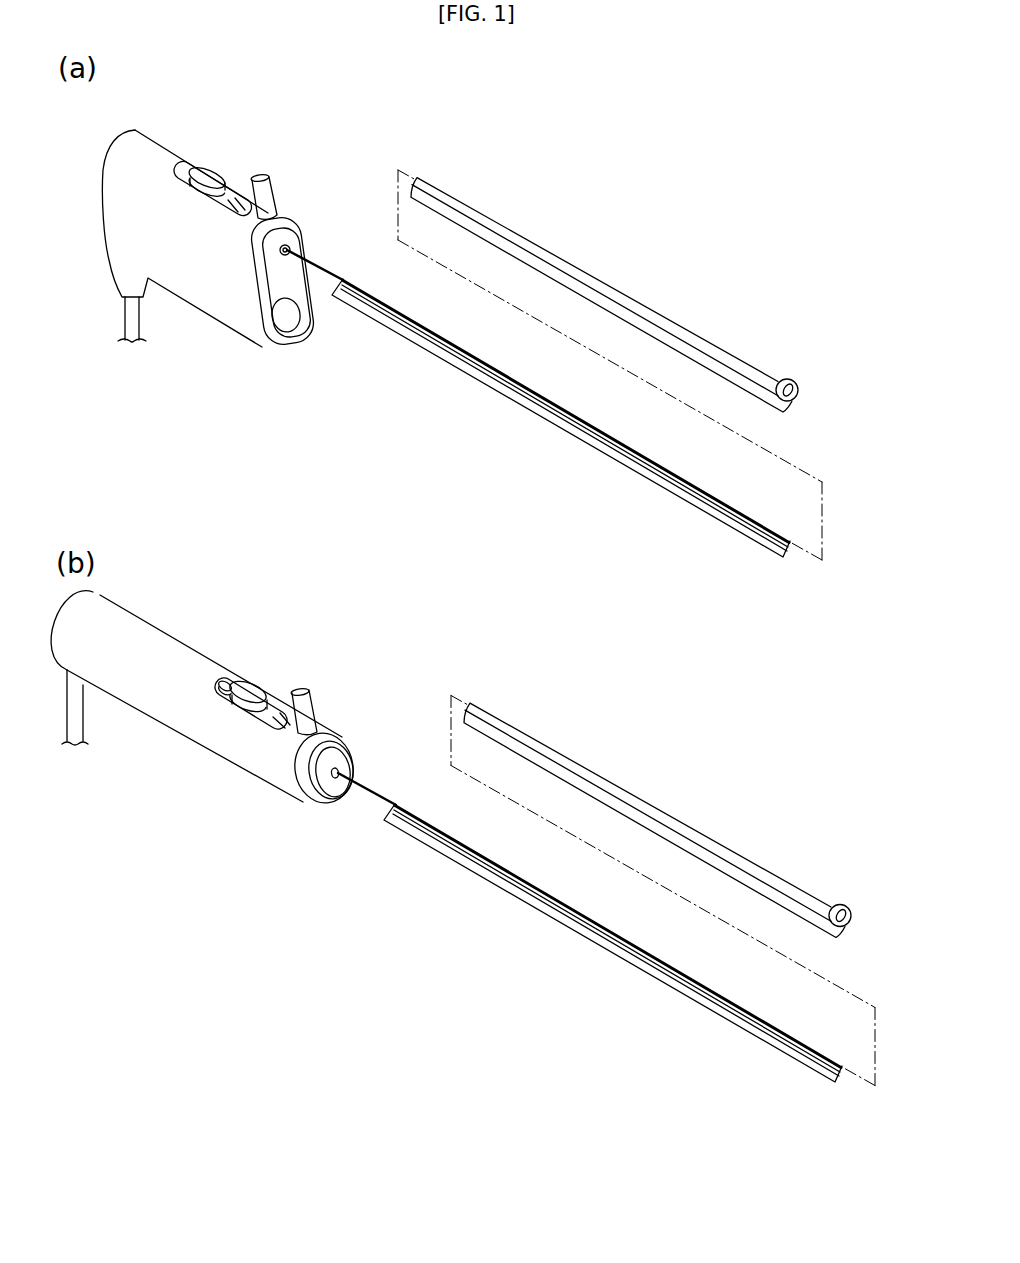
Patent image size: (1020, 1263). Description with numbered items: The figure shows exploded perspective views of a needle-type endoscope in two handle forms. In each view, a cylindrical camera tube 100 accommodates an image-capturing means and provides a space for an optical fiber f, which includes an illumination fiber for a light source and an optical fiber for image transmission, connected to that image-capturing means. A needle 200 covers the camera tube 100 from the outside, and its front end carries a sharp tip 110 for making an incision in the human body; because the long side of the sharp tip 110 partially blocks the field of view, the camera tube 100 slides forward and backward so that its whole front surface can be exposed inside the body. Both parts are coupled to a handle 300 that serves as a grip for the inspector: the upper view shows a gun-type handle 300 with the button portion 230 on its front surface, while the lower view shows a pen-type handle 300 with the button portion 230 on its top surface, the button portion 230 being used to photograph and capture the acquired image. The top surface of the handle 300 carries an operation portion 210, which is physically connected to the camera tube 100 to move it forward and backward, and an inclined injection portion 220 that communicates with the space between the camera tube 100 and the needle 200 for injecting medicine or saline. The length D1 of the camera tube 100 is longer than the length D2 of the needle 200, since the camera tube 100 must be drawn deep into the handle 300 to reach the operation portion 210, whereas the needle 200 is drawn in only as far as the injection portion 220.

The camera tube 100 is at (521, 380).
The sharp tip 110 is at (788, 379).
The needle 200 is at (583, 268).
The operation portion 210 is at (213, 177).
The injection portion 220 is at (271, 192).
The button portion 230 is at (284, 314).
The handle 300 is at (193, 147).
The optical fiber f is at (327, 268).
The length of the camera tube D1 is at (502, 394).
The length of the needle D2 is at (540, 271).